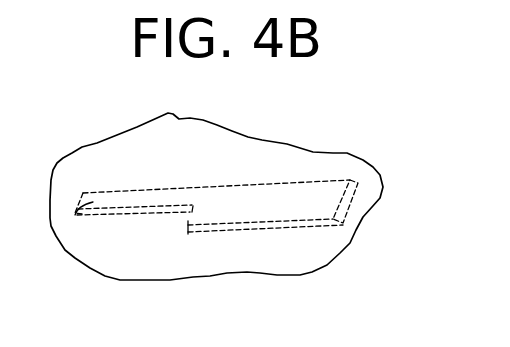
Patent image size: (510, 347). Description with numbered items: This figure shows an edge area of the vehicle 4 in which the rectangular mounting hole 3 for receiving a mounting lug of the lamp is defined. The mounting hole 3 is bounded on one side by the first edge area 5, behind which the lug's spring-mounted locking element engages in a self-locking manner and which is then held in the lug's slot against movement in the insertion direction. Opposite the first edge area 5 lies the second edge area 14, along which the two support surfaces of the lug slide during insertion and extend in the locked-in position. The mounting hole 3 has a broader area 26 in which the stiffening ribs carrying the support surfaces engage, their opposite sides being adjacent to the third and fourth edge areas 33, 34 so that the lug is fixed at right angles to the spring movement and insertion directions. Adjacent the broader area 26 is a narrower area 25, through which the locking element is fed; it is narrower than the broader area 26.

The mounting hole 3 is at (252, 205).
The first edge area 5 is at (125, 192).
The narrower area 25 is at (77, 214).
The fourth edge area 34 is at (188, 213).
The broader area 26 is at (235, 207).
The second edge area 14 is at (288, 224).
The vehicle 4 is at (198, 253).
The third edge area 33 is at (362, 220).